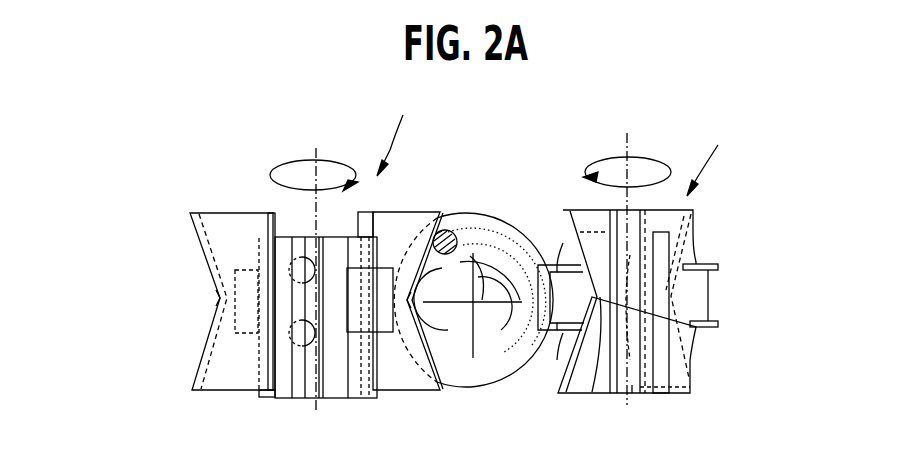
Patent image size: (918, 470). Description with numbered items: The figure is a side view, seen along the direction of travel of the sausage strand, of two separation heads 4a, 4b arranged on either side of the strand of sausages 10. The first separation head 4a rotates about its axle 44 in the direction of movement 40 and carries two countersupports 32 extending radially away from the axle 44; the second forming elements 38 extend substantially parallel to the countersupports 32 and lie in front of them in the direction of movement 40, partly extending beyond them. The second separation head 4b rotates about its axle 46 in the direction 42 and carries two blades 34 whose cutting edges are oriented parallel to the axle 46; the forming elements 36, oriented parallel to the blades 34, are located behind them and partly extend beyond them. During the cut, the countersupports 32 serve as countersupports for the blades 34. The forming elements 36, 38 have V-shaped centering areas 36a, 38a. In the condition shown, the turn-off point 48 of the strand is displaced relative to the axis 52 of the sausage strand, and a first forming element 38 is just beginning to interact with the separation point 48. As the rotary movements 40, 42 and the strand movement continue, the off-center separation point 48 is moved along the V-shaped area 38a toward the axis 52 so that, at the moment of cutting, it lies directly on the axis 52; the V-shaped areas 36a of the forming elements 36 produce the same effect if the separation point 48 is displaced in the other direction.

The sausages 10 is at (483, 212).
The countersupports 32 is at (243, 330).
The blades 34 is at (697, 310).
The forming elements 36 is at (693, 210).
The V-shaped centering area 36a is at (670, 298).
The second forming elements 38 is at (203, 213).
The V-shaped centering area 38a is at (218, 298).
The direction of movement 40 is at (330, 158).
The direction of movement 42 is at (642, 157).
The axle 44 is at (313, 392).
The axle 46 is at (632, 392).
The separation point 48 is at (447, 230).
The axis of the sausage strand 52 is at (473, 303).
The separation head 4a is at (399, 129).
The separation head 4b is at (712, 154).